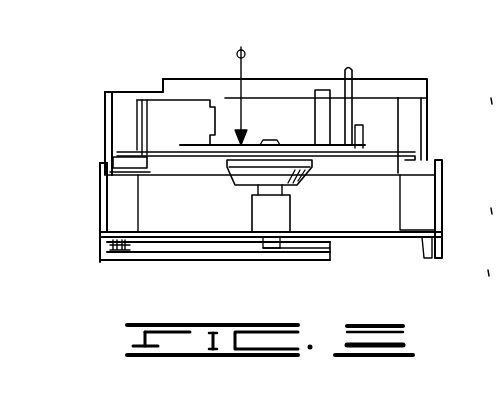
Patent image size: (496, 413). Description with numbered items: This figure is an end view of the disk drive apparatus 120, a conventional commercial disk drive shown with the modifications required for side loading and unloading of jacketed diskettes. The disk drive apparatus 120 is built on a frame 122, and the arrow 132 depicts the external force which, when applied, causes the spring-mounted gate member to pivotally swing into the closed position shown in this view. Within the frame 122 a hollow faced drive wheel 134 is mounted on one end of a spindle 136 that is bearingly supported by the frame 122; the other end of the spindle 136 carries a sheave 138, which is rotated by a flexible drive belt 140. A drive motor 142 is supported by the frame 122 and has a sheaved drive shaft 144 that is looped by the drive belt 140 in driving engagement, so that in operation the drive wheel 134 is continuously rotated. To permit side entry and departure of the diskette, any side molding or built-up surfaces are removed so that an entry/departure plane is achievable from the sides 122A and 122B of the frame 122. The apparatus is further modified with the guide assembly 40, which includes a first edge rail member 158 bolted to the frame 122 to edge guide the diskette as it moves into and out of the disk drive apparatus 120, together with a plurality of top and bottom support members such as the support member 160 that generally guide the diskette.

The guide assembly 40 is at (200, 78).
The disk drive apparatus 120 is at (100, 143).
The frame 122 is at (100, 200).
The side of the frame 122A is at (442, 161).
The side of the frame 122B is at (100, 162).
The arrow 132 is at (245, 53).
The drive wheel 134 is at (300, 172).
The spindle 136 is at (252, 193).
The sheave 138 is at (318, 262).
The drive belt 140 is at (192, 262).
The drive motor 142 is at (104, 92).
The sheaved drive shaft 144 is at (122, 262).
The first edge rail member 158 is at (398, 79).
The support member 160 is at (147, 162).